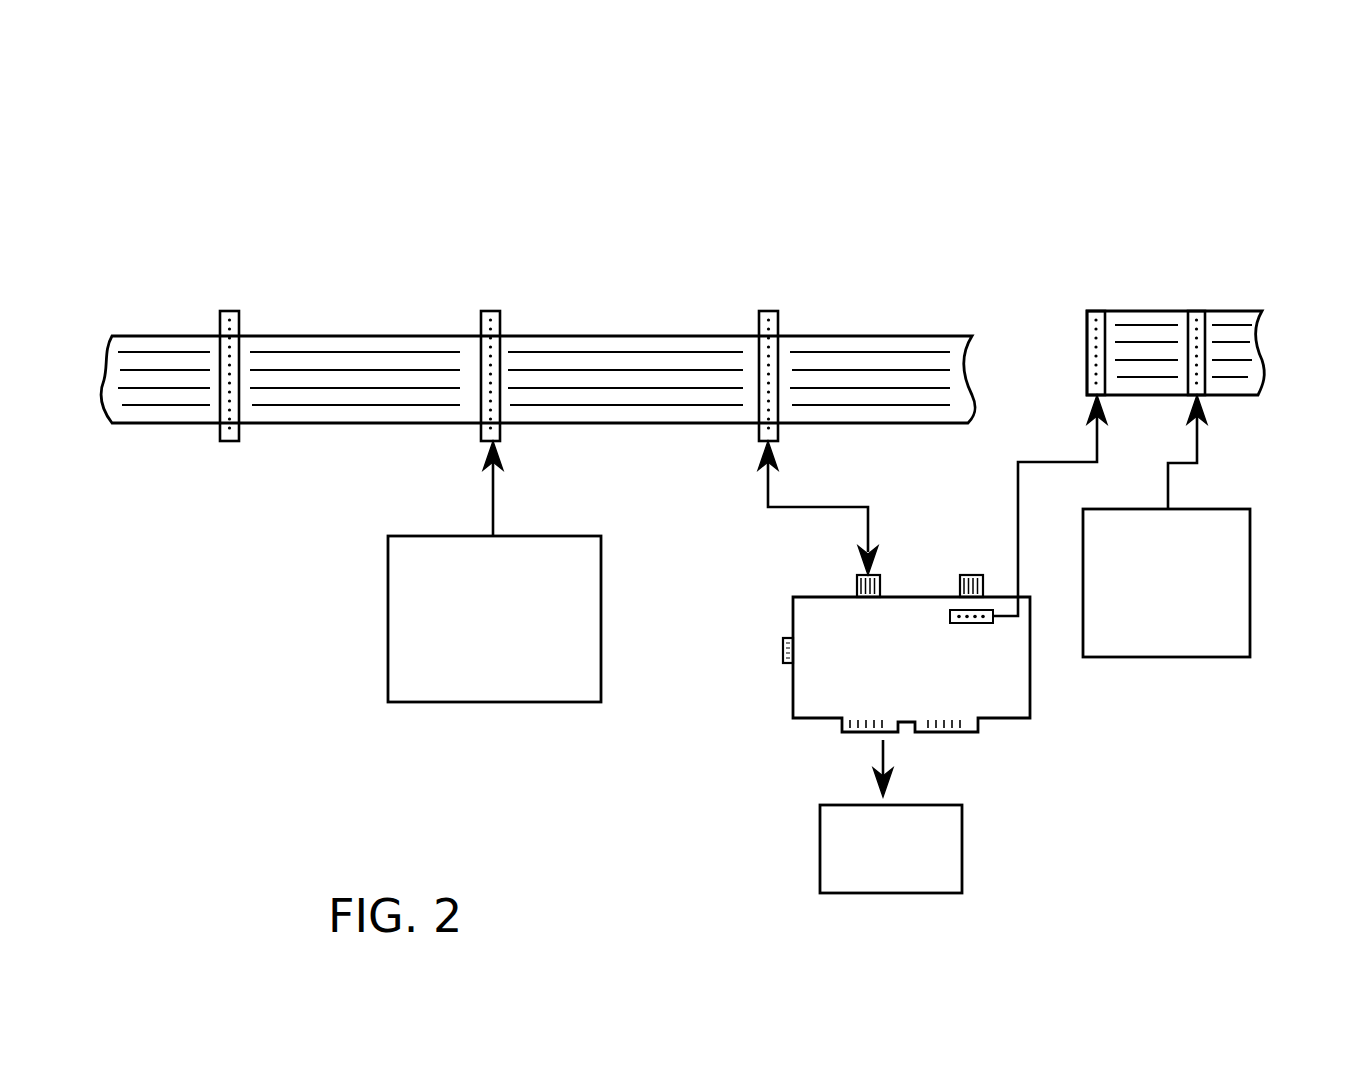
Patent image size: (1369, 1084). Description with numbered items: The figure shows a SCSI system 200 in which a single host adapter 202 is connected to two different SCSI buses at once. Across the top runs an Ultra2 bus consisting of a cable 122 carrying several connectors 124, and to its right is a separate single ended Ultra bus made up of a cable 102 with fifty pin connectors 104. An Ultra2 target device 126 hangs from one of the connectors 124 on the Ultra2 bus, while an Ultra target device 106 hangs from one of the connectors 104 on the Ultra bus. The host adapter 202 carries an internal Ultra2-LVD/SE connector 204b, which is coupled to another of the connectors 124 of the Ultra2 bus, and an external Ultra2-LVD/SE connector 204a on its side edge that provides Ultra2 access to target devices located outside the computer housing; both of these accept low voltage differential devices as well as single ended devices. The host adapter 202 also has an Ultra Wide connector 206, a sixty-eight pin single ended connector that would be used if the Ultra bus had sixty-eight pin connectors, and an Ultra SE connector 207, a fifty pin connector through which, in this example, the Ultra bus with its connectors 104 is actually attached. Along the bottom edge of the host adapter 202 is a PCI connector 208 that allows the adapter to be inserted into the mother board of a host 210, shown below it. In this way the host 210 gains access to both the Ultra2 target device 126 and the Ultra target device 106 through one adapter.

The SCSI system 200 is at (898, 183).
The cable 122 is at (326, 343).
The connectors 124 is at (228, 318).
The cable 102 is at (1118, 318).
The connectors 104 is at (1090, 318).
The Ultra2 target devices 126 is at (602, 620).
The Ultra target devices 106 is at (1251, 553).
The host adapter 202 is at (792, 688).
The external Ultra2-LVD/SE connector 204a is at (782, 648).
The internal Ultra2-LVD/SE connector 204b is at (856, 586).
The Ultra Wide connector 206 is at (963, 580).
The Ultra SE connector 207 is at (995, 622).
The PCI connector 208 is at (950, 735).
The host 210 is at (963, 832).